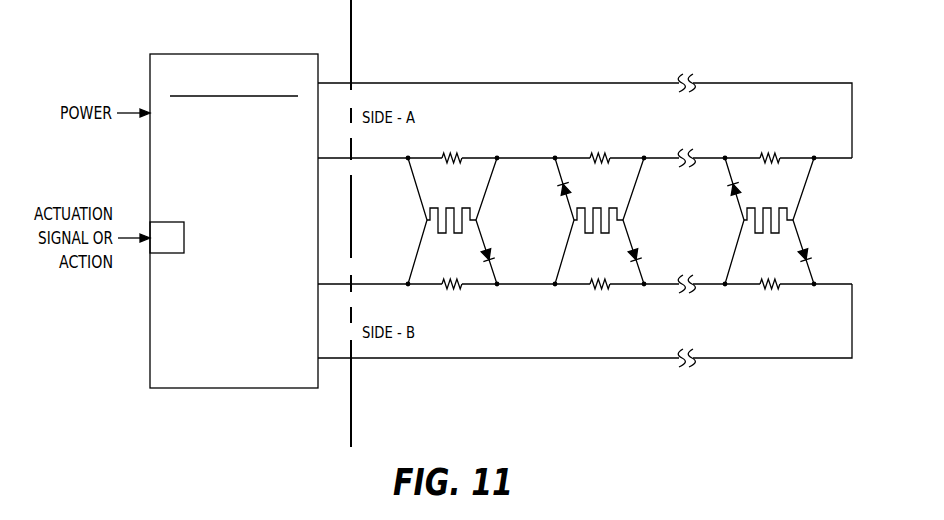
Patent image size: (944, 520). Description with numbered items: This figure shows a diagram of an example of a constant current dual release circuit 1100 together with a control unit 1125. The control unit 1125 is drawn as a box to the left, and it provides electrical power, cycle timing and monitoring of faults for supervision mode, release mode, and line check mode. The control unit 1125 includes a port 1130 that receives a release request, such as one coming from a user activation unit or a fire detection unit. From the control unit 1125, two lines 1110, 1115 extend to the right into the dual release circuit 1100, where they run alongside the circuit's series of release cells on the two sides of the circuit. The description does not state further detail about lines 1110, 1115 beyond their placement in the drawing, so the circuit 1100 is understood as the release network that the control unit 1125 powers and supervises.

The constant current dual release circuit 1100 is at (772, 43).
The control unit 1125 is at (233, 53).
The port 1130 is at (186, 238).
The side A line 1110 is at (360, 158).
The side B line 1115 is at (362, 287).